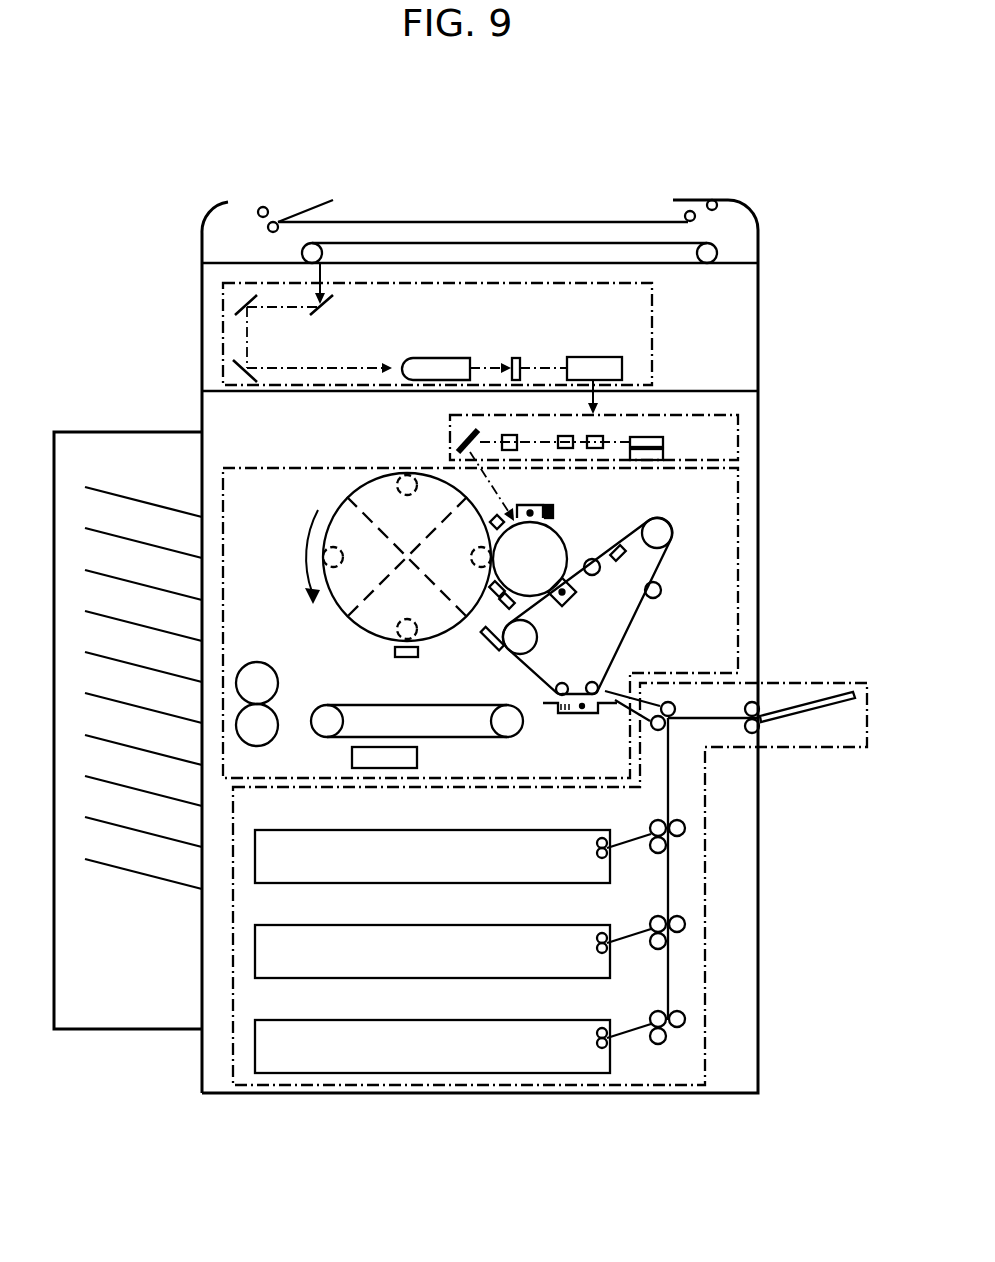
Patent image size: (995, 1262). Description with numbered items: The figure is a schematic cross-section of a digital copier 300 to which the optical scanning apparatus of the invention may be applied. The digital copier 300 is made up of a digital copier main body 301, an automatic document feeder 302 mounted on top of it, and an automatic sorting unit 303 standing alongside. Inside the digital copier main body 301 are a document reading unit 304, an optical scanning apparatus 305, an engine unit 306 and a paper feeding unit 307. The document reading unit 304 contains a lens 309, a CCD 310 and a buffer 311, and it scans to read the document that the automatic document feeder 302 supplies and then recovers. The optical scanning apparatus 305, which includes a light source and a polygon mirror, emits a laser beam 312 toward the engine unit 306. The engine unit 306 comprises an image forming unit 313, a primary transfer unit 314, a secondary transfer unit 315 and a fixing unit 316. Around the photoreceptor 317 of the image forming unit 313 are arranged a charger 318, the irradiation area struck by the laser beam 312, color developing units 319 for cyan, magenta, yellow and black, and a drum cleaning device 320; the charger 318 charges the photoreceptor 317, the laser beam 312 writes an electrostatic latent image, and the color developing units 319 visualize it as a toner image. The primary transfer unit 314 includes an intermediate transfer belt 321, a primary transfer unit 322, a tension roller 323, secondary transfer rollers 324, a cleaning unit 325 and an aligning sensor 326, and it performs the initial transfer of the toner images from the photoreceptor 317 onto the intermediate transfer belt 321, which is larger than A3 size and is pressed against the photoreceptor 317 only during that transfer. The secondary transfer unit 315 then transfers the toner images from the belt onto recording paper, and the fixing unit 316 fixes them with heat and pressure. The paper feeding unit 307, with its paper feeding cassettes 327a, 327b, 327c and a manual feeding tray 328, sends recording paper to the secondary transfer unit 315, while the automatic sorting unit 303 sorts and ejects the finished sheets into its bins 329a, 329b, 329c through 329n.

The digital copier 300 is at (220, 187).
The digital copier main body 301 is at (758, 320).
The automatic document feeder 302 is at (483, 222).
The automatic sorting unit 303 is at (90, 432).
The document reading unit 304 is at (222, 338).
The optical scanning apparatus 305 is at (738, 437).
The engine unit 306 is at (738, 570).
The paper feeding unit 307 is at (830, 748).
The lens 309 is at (438, 358).
The CCD 310 is at (517, 358).
The buffer 311 is at (590, 357).
The laser beam 312 is at (488, 486).
The image forming unit 313 is at (603, 493).
The primary transfer unit 314 is at (641, 638).
The secondary transfer unit 315 is at (582, 716).
The fixing unit 316 is at (262, 663).
The photoreceptor 317 is at (565, 541).
The charger 318 is at (548, 498).
The color developing units 319 is at (345, 497).
The drum cleaning device 320 is at (565, 527).
The intermediate transfer belt 321 is at (675, 553).
The primary transfer unit 322 is at (571, 601).
The tension roller 323 is at (594, 575).
The secondary transfer rollers 324 is at (590, 682).
The cleaning unit 325 is at (489, 647).
The aligning sensor 326 is at (662, 572).
The paper feeding cassette 327a is at (518, 830).
The paper feeding cassette 327b is at (518, 925).
The paper feeding cassette 327c is at (518, 1020).
The manual feeding tray 328 is at (800, 706).
The bin 329a is at (147, 498).
The bin 329b is at (107, 533).
The bin 329c is at (107, 575).
The bin 329n is at (100, 862).